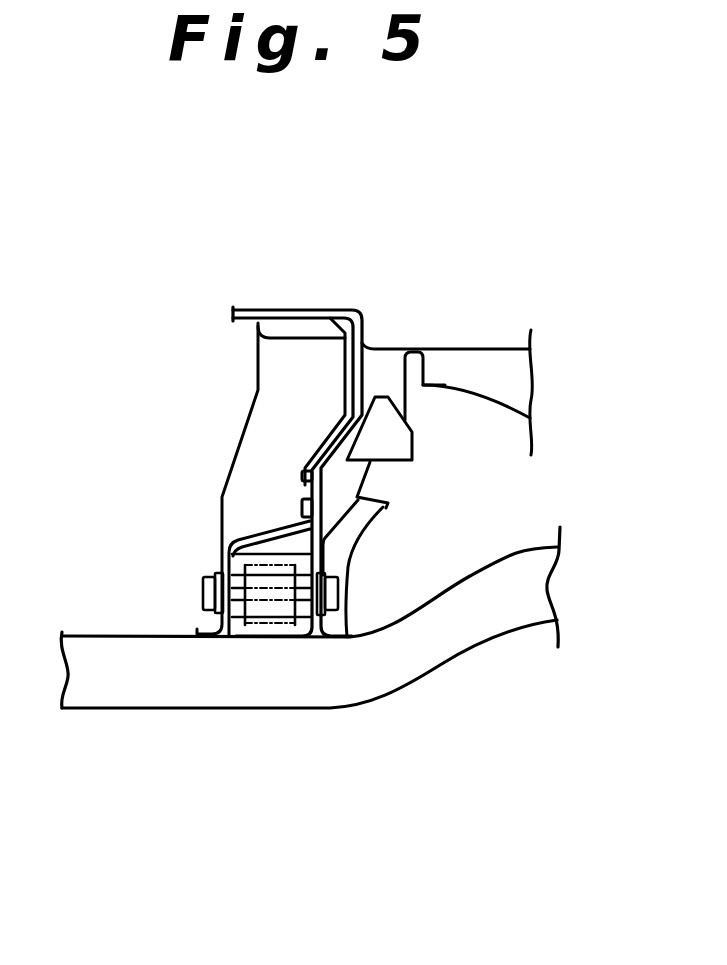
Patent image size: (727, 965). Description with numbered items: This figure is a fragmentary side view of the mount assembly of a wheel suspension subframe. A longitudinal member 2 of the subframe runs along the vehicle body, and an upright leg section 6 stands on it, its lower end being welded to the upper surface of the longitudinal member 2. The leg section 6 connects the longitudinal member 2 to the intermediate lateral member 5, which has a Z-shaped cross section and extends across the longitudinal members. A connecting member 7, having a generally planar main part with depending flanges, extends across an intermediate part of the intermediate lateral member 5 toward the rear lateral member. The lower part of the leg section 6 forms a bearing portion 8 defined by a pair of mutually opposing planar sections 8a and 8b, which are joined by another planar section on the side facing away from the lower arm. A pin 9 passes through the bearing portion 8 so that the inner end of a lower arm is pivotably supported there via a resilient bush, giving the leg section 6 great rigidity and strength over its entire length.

The longitudinal member 2 is at (397, 683).
The intermediate lateral member 5 is at (307, 325).
The leg section 6 is at (207, 430).
The connecting member 7 is at (464, 360).
The bearing portion 8 is at (98, 497).
The planar section 8a is at (227, 550).
The planar section 8b is at (220, 572).
The pin 9 is at (258, 603).